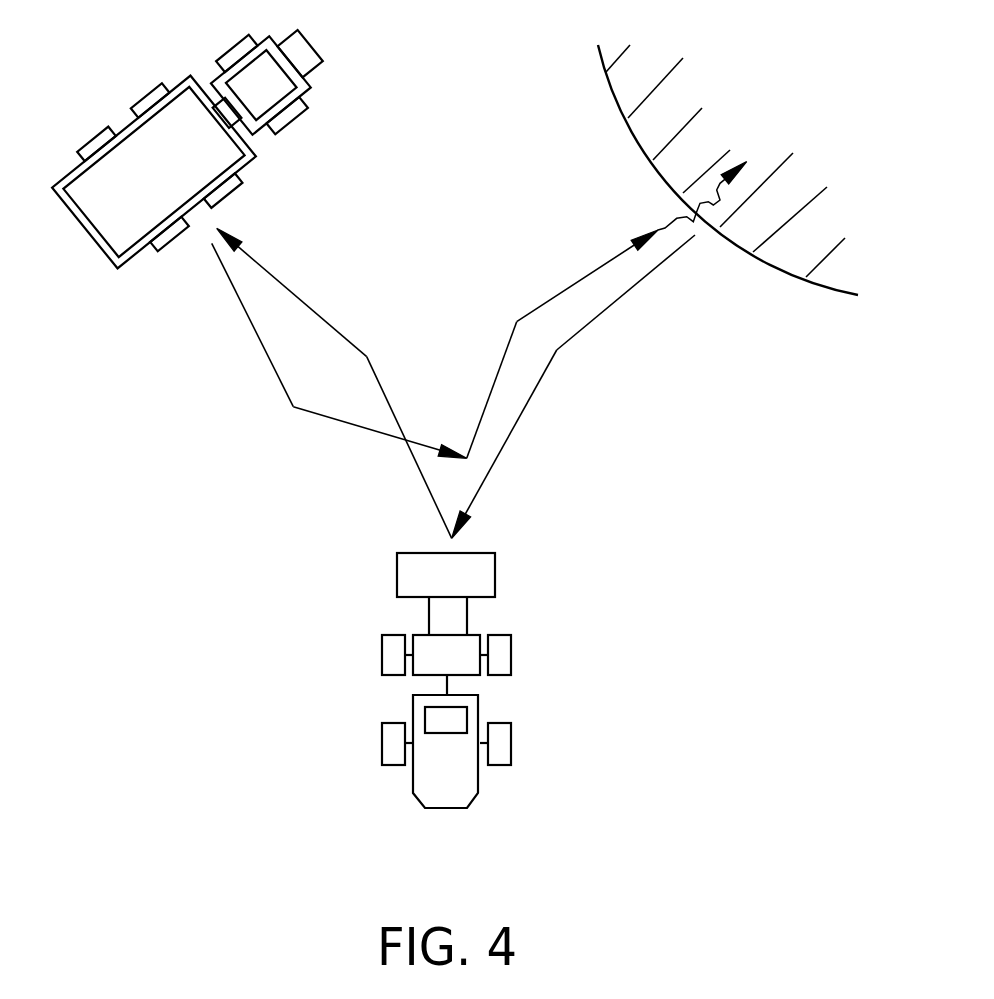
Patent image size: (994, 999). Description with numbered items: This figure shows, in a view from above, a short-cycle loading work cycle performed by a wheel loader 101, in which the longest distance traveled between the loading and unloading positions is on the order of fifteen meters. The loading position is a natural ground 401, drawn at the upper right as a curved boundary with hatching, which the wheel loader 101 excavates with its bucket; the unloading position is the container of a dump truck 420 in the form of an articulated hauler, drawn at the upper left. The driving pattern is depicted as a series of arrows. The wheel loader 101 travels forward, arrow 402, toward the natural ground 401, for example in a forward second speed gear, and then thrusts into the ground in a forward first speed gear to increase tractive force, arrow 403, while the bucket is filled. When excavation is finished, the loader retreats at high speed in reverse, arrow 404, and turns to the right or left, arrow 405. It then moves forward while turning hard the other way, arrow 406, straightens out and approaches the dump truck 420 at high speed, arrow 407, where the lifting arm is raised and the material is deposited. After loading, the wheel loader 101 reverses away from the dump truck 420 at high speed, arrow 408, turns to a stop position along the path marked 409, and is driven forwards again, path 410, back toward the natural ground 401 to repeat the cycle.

The wheel loader 101 is at (535, 675).
The natural ground 401 is at (750, 235).
The arrow 402 is at (577, 283).
The arrow 403 is at (683, 212).
The arrow 404 is at (607, 308).
The arrow 405 is at (515, 425).
The arrow 406 is at (384, 393).
The arrow 407 is at (297, 296).
The arrow 408 is at (272, 367).
The return signal 409 is at (348, 423).
The forward drive 410 is at (503, 357).
The dump truck 420 is at (95, 222).